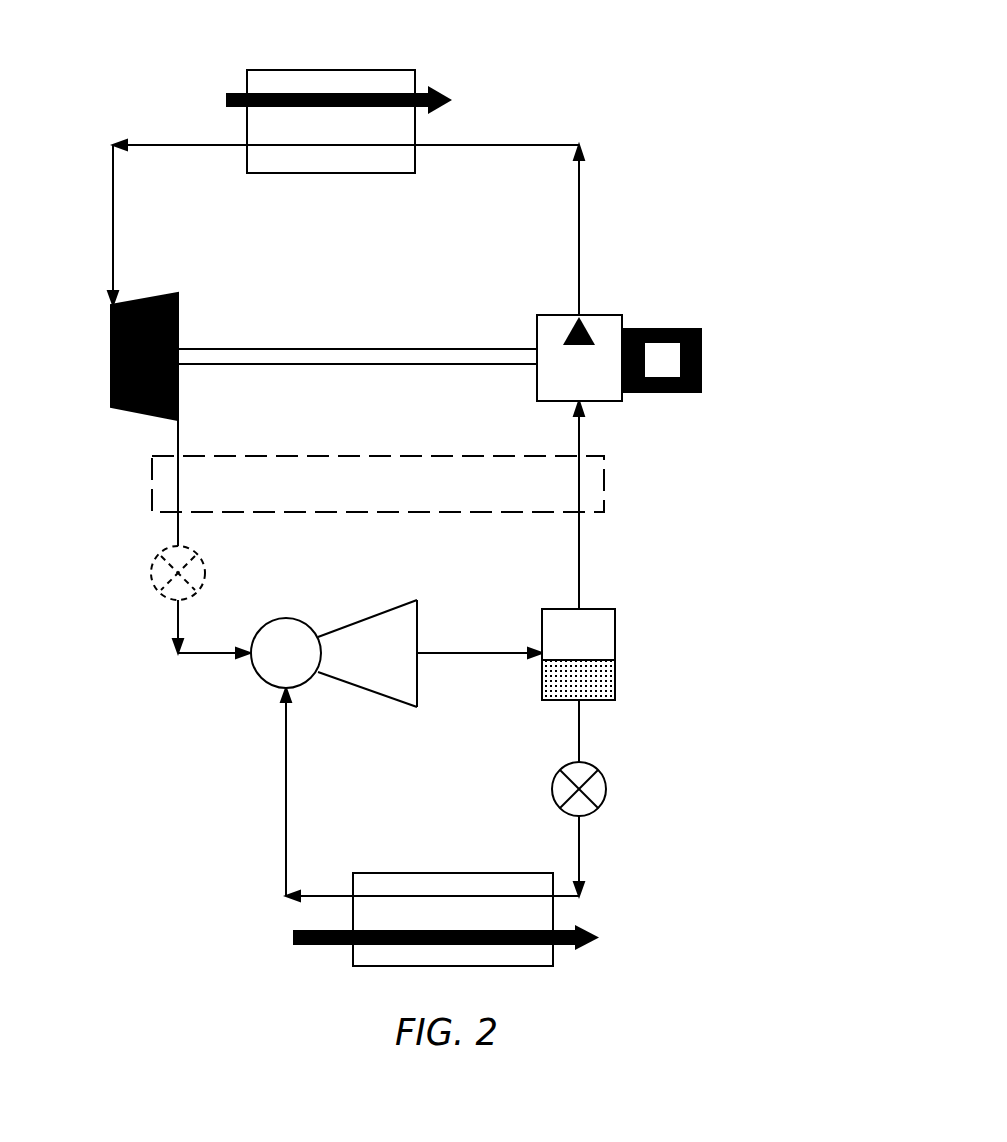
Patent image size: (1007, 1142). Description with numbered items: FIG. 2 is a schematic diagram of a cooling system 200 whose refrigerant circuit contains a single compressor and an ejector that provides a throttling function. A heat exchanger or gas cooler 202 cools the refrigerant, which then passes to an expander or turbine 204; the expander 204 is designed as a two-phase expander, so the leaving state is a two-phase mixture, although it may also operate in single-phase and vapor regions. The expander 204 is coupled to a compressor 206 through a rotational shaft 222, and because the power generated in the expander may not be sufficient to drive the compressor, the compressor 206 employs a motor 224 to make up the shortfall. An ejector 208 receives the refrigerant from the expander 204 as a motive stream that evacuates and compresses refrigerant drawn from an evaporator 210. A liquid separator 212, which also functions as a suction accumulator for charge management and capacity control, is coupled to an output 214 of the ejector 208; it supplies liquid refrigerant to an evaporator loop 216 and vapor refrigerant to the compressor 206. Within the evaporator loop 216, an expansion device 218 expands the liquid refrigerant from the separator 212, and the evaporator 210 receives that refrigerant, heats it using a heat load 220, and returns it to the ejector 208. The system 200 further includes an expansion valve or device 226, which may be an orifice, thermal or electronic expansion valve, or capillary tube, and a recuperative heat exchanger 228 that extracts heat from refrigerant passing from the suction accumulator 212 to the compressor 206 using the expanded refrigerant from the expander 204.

The cooling system 200 is at (621, 55).
The heat exchanger or gas cooler 202 is at (276, 70).
The expander or turbine 204 is at (137, 412).
The compressor 206 is at (607, 315).
The ejector 208 is at (247, 685).
The evaporator 210 is at (530, 966).
The liquid separator (suction accumulator) 212 is at (615, 632).
The output of ejector 214 is at (433, 673).
The evaporator loop 216 is at (640, 778).
The expansion device 218 is at (585, 812).
The heat load 220 is at (313, 950).
The rotational shaft 222 is at (365, 349).
The motor 224 is at (702, 358).
The expansion valve or device 226 is at (137, 600).
The recuperative heat exchanger 228 is at (606, 486).